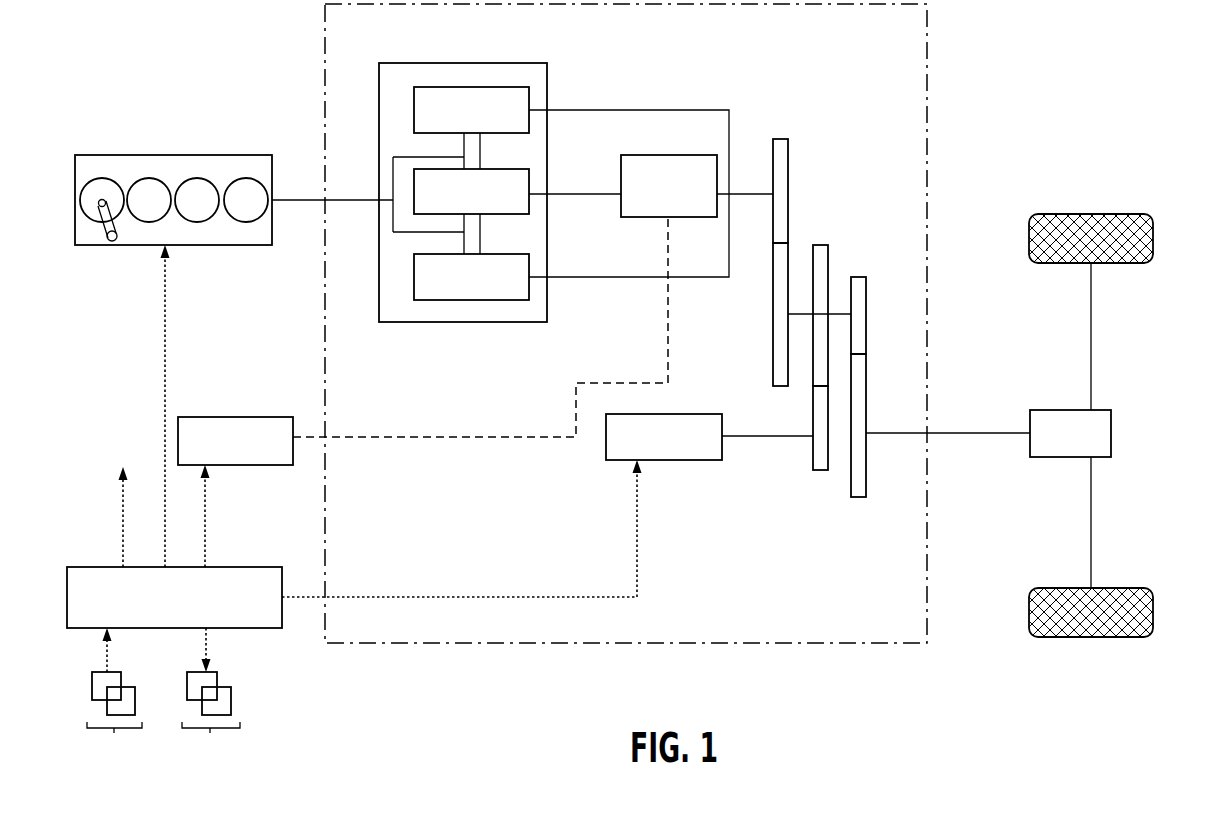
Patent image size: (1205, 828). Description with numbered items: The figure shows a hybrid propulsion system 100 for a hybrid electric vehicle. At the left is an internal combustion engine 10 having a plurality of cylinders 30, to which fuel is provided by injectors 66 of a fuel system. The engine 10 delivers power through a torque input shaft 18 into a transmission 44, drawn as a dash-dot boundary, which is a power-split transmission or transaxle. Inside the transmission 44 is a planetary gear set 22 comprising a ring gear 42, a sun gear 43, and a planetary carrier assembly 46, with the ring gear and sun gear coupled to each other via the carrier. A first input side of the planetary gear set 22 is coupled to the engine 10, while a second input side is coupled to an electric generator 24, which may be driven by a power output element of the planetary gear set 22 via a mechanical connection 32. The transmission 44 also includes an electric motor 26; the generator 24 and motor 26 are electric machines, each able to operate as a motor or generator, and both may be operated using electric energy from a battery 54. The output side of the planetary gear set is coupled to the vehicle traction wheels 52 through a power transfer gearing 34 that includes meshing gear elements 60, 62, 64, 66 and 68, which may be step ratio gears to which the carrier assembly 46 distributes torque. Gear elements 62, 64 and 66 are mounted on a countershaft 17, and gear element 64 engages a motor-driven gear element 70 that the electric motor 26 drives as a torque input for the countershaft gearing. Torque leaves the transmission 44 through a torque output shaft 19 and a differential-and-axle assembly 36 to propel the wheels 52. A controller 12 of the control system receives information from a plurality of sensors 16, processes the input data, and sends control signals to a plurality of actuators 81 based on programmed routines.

The hybrid propulsion system 100 is at (1122, 78).
The internal combustion engine 10 is at (487, 240).
The cylinders 30 is at (94, 183).
The injectors 66 is at (106, 236).
The torque input shaft 18 is at (283, 200).
The planetary gear set 22 is at (554, 177).
The ring gear 42 is at (571, 193).
The sun gear 43 is at (471, 191).
The planetary carrier assembly 46 is at (472, 163).
The mechanical connection 32 is at (561, 194).
The electric generator 24 is at (697, 186).
The power transfer gearing 34 is at (820, 309).
The meshing gear element 60 is at (780, 139).
The gear element 62 is at (773, 329).
The gear element 64 is at (820, 245).
The motor-driven gear element 70 is at (820, 471).
The meshing gear element 68 is at (859, 498).
The countershaft 17 is at (797, 313).
The electric motor 26 is at (709, 437).
The torque output shaft 19 is at (951, 433).
The differential-and-axle assembly 36 is at (1070, 425).
The vehicle traction wheels 52 is at (1076, 214).
The battery 54 is at (423, 341).
The controller 12 is at (354, 436).
The sensors 16 is at (109, 703).
The actuators 81 is at (207, 703).
The transmission 44 is at (928, 47).